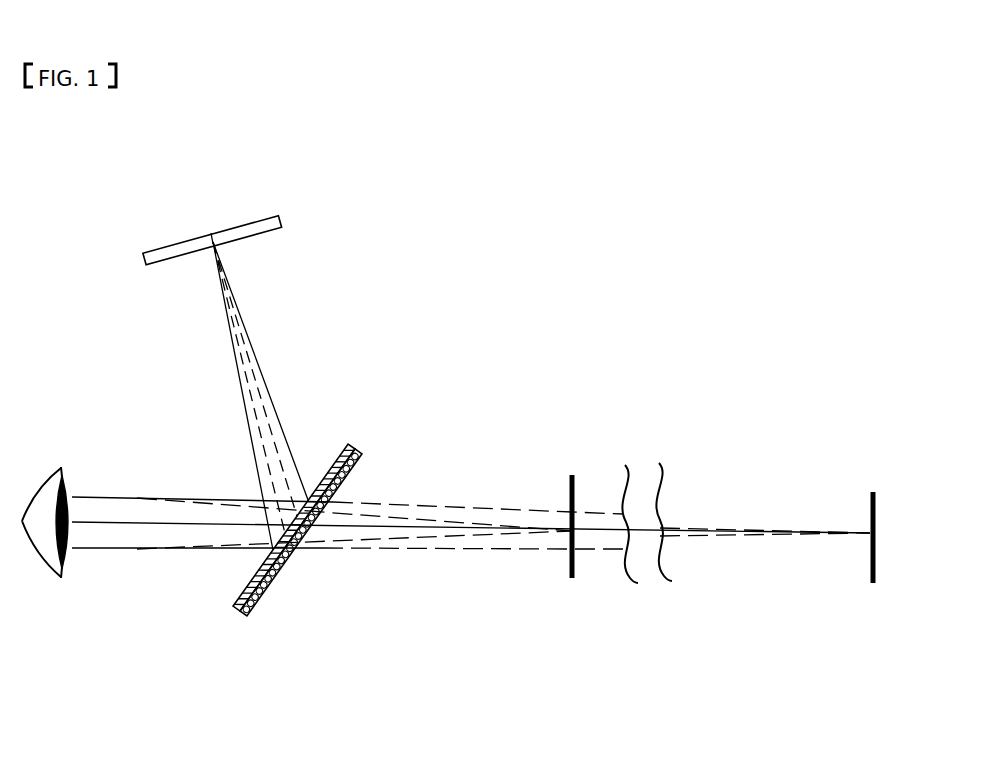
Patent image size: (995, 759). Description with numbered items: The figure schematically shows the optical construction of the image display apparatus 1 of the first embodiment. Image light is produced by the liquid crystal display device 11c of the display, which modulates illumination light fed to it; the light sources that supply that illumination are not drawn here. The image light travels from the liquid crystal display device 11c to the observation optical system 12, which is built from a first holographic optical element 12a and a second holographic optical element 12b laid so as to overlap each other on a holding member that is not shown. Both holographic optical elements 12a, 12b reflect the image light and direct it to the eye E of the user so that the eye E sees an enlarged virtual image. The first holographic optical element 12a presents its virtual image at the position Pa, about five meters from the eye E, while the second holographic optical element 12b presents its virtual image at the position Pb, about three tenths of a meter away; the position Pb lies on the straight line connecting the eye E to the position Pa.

The image display apparatus 1 is at (305, 673).
The liquid crystal display device 11c is at (262, 218).
The observation optical system 12 is at (465, 439).
The first holographic optical element 12a is at (348, 447).
The second holographic optical element 12b is at (364, 456).
The eye E is at (68, 557).
The virtual image position Pb is at (573, 582).
The virtual image position Pa is at (875, 586).